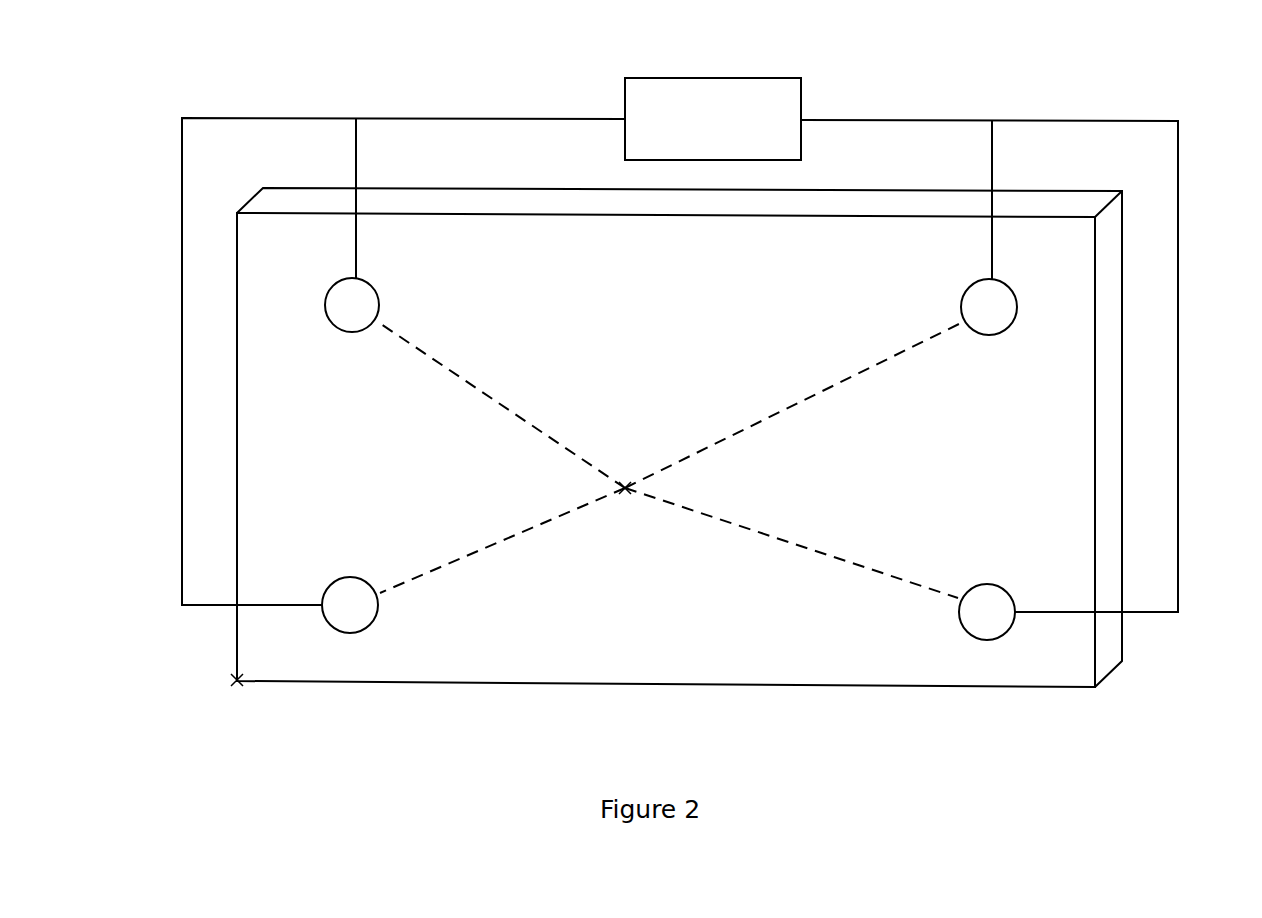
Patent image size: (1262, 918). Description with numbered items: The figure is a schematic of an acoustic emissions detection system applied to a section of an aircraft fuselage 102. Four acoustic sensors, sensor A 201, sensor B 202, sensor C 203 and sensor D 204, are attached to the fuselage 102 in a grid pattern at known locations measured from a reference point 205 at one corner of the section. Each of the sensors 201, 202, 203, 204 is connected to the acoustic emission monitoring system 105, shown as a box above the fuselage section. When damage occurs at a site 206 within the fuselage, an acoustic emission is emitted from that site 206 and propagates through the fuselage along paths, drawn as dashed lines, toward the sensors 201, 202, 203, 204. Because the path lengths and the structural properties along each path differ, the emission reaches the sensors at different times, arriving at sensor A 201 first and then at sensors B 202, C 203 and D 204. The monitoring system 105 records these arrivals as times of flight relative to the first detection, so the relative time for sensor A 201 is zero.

The acoustic emission monitoring system 105 is at (715, 78).
The fuselage 102 is at (237, 385).
The sensor A 201 is at (348, 633).
The sensor B 202 is at (325, 308).
The sensor C 203 is at (1017, 307).
The sensor D 204 is at (1015, 606).
The reference point 205 is at (237, 680).
The damage site 206 is at (625, 490).